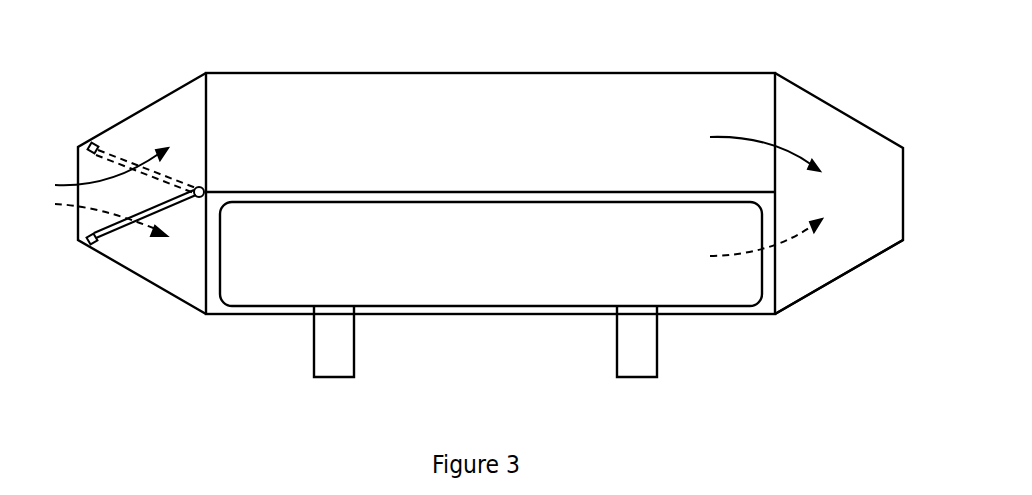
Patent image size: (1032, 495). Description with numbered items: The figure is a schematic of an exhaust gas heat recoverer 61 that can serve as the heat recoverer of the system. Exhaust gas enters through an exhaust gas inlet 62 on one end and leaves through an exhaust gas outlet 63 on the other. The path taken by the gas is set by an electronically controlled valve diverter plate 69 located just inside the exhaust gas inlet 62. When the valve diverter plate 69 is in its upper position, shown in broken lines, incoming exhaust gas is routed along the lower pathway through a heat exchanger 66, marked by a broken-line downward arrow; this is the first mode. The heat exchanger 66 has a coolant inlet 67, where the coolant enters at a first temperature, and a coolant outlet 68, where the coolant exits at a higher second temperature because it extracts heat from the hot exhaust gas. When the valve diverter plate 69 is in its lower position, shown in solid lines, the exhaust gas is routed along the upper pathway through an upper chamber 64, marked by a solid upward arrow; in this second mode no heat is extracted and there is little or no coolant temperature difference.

The exhaust gas heat recoverer 61 is at (857, 97).
The exhaust gas inlet 62 is at (142, 130).
The exhaust gas outlet 63 is at (847, 250).
The upper chamber 64 is at (330, 90).
The heat exchanger 66 is at (492, 292).
The coolant inlet 67 is at (335, 363).
The coolant outlet 68 is at (640, 363).
The valve diverter plate 69 is at (118, 228).